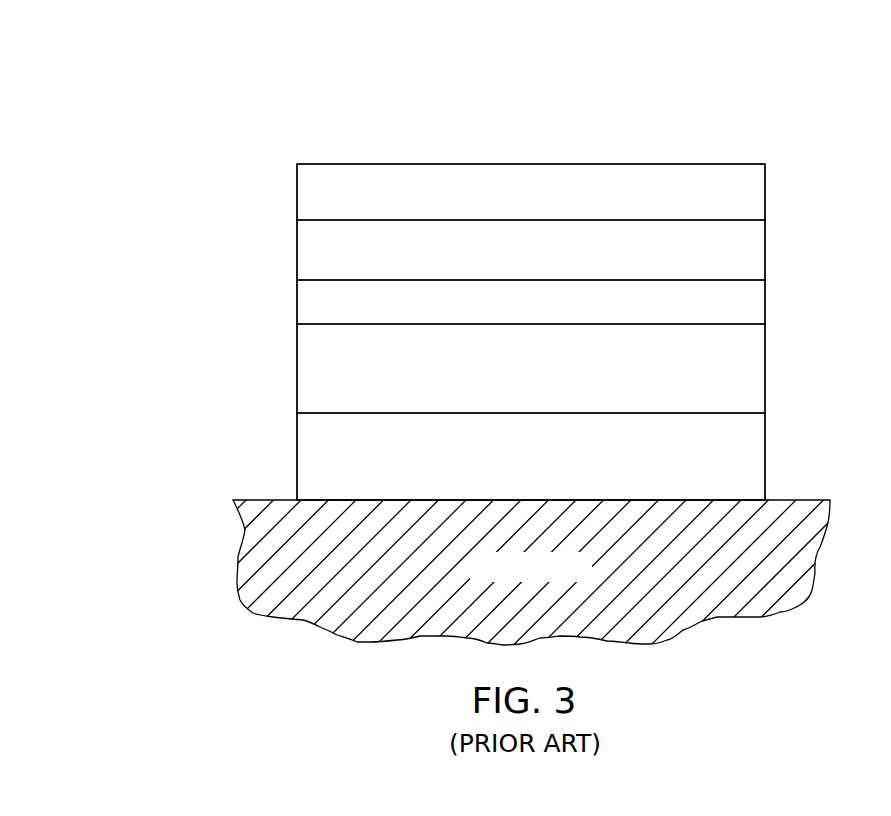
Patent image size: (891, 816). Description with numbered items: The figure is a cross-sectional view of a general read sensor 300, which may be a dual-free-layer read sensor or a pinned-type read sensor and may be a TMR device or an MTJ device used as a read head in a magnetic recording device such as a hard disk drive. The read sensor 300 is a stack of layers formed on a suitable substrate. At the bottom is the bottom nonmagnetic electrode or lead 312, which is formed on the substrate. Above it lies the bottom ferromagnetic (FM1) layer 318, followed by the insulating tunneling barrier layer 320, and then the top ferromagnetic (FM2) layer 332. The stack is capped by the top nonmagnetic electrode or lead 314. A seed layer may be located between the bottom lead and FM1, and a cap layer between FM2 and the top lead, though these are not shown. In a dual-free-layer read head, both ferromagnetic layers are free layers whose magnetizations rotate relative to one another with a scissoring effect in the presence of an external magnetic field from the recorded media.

The read sensor 300 is at (146, 80).
The bottom nonmagnetic electrode 312 is at (297, 455).
The top nonmagnetic electrode 314 is at (297, 190).
The bottom ferromagnetic (FM1) layer 318 is at (297, 366).
The insulating tunneling barrier layer 320 is at (297, 303).
The top ferromagnetic (FM2) layer 332 is at (297, 251).